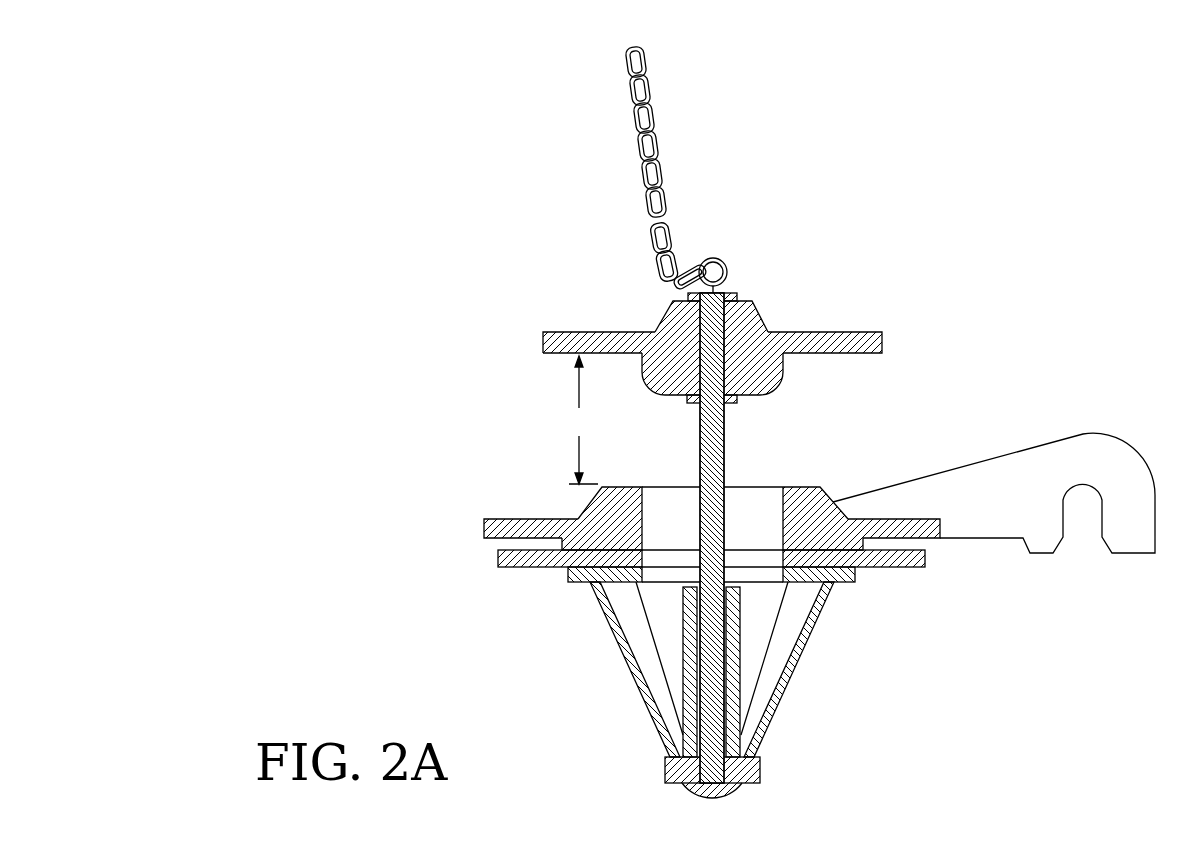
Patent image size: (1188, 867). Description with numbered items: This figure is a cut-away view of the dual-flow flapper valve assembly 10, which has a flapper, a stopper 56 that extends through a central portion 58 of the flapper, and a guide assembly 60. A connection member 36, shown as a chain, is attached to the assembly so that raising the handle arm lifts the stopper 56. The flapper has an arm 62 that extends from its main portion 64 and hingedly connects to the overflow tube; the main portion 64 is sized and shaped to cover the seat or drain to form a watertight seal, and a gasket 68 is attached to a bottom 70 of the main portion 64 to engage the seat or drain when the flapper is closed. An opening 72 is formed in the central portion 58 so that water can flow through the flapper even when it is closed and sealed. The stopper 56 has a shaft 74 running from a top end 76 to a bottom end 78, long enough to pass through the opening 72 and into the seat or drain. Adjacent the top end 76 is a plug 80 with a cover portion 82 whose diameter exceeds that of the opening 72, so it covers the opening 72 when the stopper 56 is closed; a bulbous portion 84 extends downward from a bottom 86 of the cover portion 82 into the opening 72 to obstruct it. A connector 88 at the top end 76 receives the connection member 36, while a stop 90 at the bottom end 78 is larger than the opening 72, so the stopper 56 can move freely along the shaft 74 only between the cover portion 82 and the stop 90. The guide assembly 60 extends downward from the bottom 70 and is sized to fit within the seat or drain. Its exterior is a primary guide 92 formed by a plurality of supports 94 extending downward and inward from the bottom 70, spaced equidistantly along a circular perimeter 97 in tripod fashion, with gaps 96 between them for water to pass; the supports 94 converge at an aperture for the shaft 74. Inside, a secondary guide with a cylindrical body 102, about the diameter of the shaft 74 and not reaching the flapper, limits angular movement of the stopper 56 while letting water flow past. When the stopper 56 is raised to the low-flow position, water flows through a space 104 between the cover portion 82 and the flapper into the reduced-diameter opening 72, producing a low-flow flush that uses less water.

The dual-flow flapper valve assembly 10 is at (362, 366).
The connection member 36 is at (635, 158).
The stopper 56 is at (818, 298).
The central portion 58 is at (808, 487).
The guide assembly 60 is at (636, 800).
The arm 62 is at (1068, 434).
The main portion 64 is at (504, 518).
The gasket 68 is at (900, 569).
The bottom 70 is at (497, 551).
The opening 72 is at (671, 490).
The shaft 74 is at (727, 447).
The top end 76 is at (636, 268).
The bottom end 78 is at (762, 812).
The plug 80 is at (787, 368).
The cover portion 82 is at (572, 331).
The bulbous portion 84 is at (773, 389).
The bottom 86 is at (558, 355).
The connector 88 is at (728, 273).
The stop 90 is at (712, 799).
The primary guide 92 is at (790, 688).
The support 94 is at (655, 690).
The gap 96 is at (668, 635).
The circular perimeter 97 is at (843, 585).
The cylindrical body 102 is at (742, 650).
The space 104 is at (580, 420).